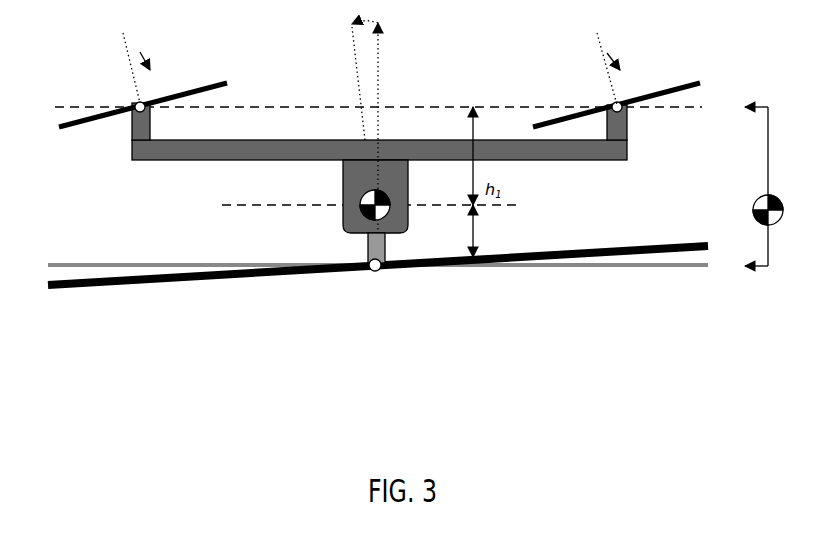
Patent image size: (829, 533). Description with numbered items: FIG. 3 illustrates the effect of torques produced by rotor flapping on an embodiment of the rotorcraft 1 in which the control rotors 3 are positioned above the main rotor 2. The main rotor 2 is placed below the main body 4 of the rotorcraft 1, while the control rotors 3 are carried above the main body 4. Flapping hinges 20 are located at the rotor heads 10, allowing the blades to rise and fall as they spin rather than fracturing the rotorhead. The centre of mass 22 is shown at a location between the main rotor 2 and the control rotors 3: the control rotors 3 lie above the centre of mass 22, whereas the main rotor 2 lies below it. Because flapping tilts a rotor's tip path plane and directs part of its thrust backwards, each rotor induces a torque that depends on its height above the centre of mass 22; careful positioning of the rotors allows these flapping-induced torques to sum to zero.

The rotorcraft 1 is at (658, 325).
The main rotor 2 is at (205, 283).
The control rotors 3 is at (668, 90).
The main body 4 is at (430, 118).
The rotor heads 10 is at (360, 282).
The flapping hinges 20 is at (382, 273).
The centre of mass 22 is at (390, 215).